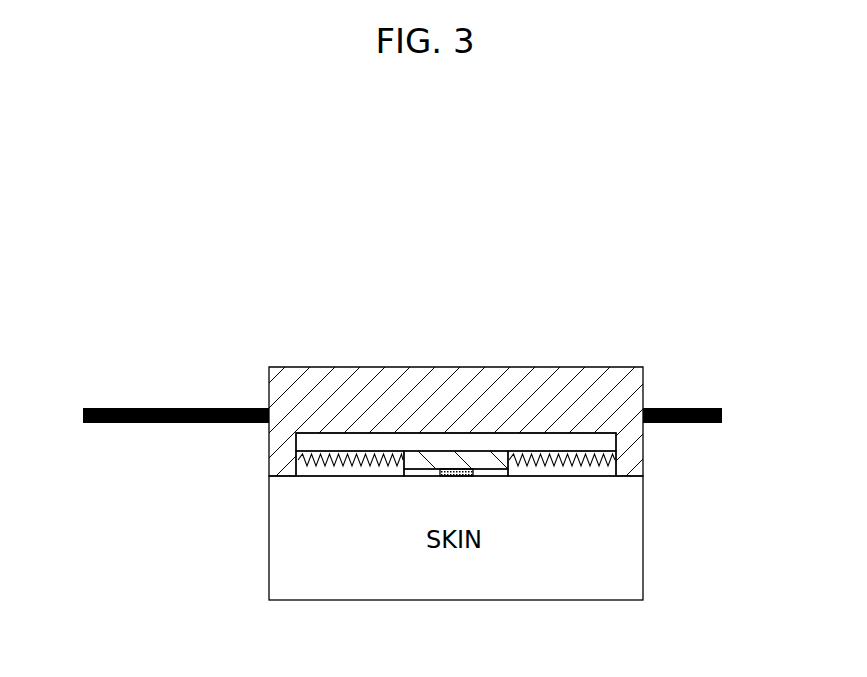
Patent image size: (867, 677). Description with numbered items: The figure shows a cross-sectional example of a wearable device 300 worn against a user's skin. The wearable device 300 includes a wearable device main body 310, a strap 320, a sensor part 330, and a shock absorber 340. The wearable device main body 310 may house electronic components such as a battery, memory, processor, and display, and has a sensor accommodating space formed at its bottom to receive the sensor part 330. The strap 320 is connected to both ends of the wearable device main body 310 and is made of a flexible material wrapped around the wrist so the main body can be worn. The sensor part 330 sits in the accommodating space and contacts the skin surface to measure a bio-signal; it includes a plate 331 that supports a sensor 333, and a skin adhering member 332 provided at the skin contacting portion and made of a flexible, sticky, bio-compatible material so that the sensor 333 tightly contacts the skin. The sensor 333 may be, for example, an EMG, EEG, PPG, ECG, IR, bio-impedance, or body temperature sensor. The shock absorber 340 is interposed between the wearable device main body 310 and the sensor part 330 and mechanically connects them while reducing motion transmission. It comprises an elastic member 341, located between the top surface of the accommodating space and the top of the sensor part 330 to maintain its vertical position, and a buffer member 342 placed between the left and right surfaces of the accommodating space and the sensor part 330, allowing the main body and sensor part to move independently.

The wearable device 300 is at (628, 316).
The wearable device main body 310 is at (460, 367).
The strap 320 is at (241, 408).
The sensor part 330 is at (714, 492).
The plate 331 is at (512, 465).
The skin adhering member 332 is at (515, 477).
The sensor 333 is at (453, 478).
The shock absorber 340 is at (714, 434).
The elastic member 341 is at (605, 439).
The buffer member 342 is at (606, 457).